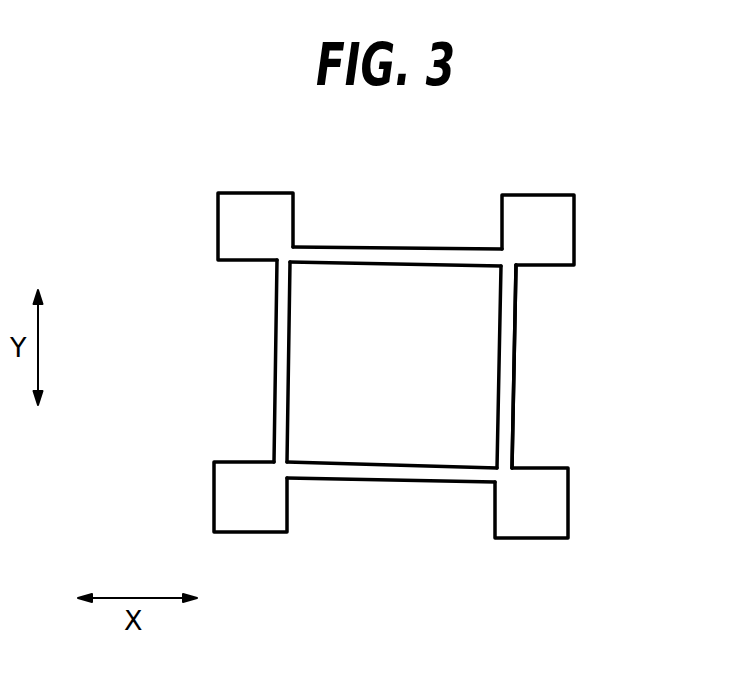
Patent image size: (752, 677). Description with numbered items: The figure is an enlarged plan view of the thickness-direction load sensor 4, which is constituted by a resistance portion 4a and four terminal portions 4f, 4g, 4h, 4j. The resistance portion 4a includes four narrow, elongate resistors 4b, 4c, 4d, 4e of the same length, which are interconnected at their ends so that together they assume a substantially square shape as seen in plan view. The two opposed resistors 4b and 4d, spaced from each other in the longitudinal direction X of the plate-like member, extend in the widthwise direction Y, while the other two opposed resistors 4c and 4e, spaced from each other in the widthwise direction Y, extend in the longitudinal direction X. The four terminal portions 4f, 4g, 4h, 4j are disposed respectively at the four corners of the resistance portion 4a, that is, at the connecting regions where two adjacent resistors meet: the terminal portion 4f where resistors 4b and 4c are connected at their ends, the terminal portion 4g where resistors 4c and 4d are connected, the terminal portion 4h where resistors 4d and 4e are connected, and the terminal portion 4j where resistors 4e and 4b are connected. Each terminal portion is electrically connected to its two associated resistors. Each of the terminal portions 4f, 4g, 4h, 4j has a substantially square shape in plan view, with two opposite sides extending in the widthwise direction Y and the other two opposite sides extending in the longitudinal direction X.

The thickness-direction load sensor 4 is at (200, 260).
The resistance portion 4a is at (523, 332).
The resistor 4b is at (276, 358).
The resistor 4c is at (390, 247).
The resistor 4d is at (512, 397).
The resistor 4e is at (386, 480).
The terminal portion 4f is at (250, 194).
The terminal portion 4g is at (570, 211).
The terminal portion 4h is at (568, 500).
The terminal portion 4j is at (216, 498).